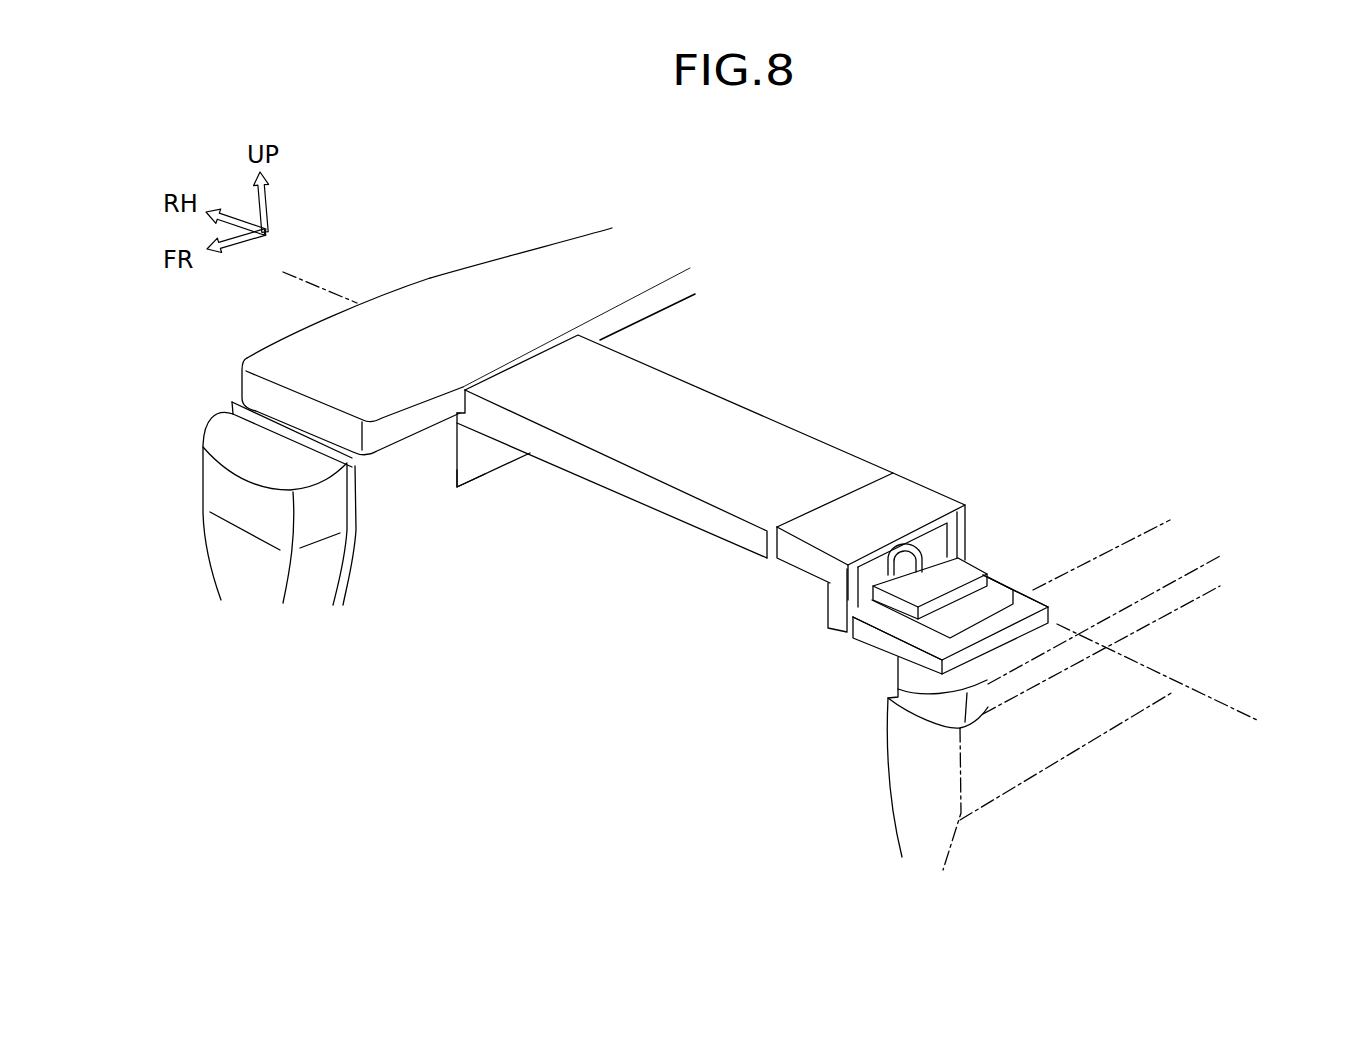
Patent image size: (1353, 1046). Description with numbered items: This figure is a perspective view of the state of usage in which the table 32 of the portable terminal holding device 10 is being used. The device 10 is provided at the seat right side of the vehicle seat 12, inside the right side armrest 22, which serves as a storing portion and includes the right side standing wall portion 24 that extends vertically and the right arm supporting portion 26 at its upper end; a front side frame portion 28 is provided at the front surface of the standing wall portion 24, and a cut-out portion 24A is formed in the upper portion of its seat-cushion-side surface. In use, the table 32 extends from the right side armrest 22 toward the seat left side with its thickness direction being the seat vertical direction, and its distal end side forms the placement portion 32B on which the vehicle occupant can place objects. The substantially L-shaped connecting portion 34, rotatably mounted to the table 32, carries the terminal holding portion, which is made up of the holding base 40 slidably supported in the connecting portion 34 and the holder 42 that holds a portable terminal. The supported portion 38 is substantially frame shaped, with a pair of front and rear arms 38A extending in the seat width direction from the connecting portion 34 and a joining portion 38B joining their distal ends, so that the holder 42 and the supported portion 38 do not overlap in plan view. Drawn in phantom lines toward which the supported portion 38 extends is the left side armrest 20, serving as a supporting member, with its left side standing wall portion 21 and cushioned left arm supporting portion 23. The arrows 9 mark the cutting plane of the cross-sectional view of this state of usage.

The section line 9- 9 is at (278, 271).
The portable terminal holding device 10 is at (818, 352).
The vehicle seat 12 is at (427, 292).
The left side armrest 20 is at (1163, 523).
The left side standing wall portion 21 is at (1043, 750).
The right side armrest 22 is at (405, 283).
The left arm supporting portion 23 is at (1110, 602).
The right side standing wall portion 24 is at (465, 528).
The cut-out portion 24A is at (470, 480).
The right arm supporting portion 26 is at (517, 283).
The front side frame portion 28 is at (243, 489).
The table 32 is at (711, 453).
The placement portion 32B is at (673, 522).
The connecting portion 34 is at (884, 536).
The supported portion 38 is at (948, 683).
The arms 38A is at (1027, 580).
The joining portion 38B is at (922, 650).
The holding base 40 is at (853, 577).
The holder 42 is at (973, 565).